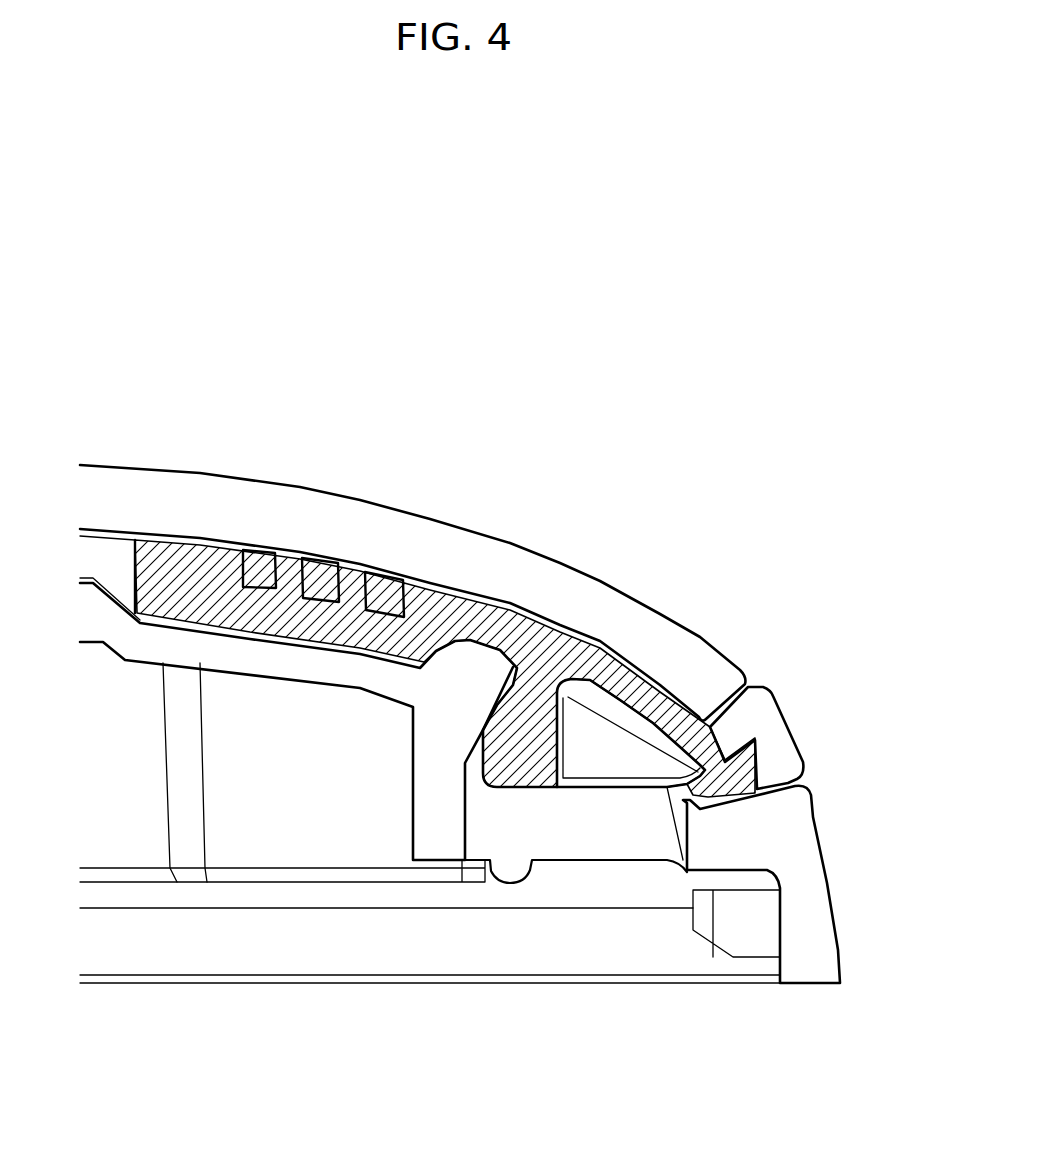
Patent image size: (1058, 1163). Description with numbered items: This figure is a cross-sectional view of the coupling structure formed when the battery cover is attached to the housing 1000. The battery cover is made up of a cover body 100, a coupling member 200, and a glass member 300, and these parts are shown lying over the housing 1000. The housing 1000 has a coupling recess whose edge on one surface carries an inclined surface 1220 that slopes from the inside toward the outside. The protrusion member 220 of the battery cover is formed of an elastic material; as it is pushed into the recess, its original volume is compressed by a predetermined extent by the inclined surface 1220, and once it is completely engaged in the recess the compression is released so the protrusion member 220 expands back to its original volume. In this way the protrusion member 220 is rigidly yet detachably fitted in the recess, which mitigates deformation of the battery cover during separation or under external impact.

The cover body 100 is at (777, 748).
The coupling member 200 is at (565, 622).
The protrusion member 220 is at (513, 753).
The glass member 300 is at (332, 520).
The housing 1000 is at (452, 713).
The inclined surface 1220 is at (502, 712).